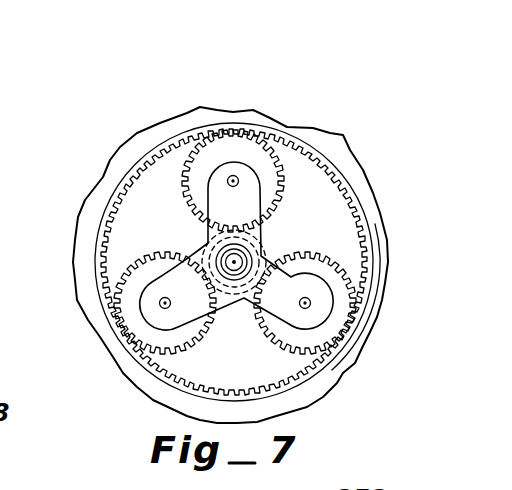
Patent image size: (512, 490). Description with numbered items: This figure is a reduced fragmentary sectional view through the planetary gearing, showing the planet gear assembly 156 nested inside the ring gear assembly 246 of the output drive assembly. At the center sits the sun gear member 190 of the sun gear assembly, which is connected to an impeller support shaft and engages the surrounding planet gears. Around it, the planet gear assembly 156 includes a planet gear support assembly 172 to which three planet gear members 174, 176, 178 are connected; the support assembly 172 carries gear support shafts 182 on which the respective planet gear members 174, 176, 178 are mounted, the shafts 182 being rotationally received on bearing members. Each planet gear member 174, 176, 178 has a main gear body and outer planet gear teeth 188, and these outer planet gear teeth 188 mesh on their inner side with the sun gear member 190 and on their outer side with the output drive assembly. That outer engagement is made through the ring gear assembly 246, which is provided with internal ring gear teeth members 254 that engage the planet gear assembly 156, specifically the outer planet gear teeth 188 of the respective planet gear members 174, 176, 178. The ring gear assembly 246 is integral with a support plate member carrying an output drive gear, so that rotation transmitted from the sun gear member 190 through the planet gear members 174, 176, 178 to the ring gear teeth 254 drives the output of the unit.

The planet gear assembly 156 is at (288, 132).
The planet gear support assembly 172 is at (258, 178).
The planet gear member 174 is at (207, 160).
The planet gear member 176 is at (340, 280).
The planet gear member 178 is at (130, 335).
The gear support shaft 182 is at (235, 180).
The outer planet gear teeth 188 is at (282, 190).
The sun gear member 190 is at (268, 262).
The ring gear assembly 246 is at (340, 377).
The internal ring gear teeth members 254 is at (185, 345).